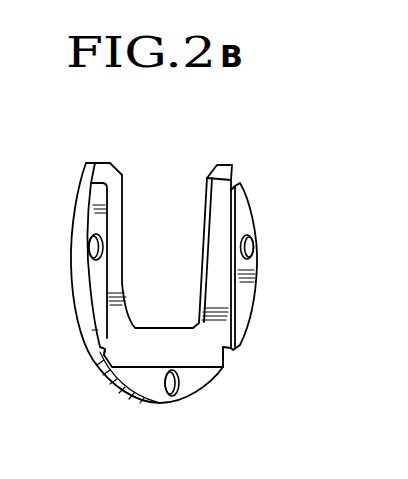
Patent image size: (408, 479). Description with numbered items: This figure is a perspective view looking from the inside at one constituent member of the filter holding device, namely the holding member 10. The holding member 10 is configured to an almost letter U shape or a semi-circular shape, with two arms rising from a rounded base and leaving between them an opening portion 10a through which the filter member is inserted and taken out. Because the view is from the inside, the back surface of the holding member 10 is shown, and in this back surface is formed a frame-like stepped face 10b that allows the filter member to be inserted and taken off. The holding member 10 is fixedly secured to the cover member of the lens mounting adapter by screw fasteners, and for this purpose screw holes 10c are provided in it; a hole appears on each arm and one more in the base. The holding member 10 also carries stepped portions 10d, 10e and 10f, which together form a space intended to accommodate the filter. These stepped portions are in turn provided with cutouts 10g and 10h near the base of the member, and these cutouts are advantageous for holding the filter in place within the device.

The holding member 10 is at (247, 323).
The opening portion 10a is at (167, 180).
The frame-like stepped face 10b is at (223, 187).
The screw holes 10c is at (253, 247).
The stepped portion 10d is at (247, 297).
The stepped portion 10e is at (95, 270).
The stepped portion 10f is at (193, 382).
The cutout 10g is at (112, 353).
The cutout 10h is at (227, 360).